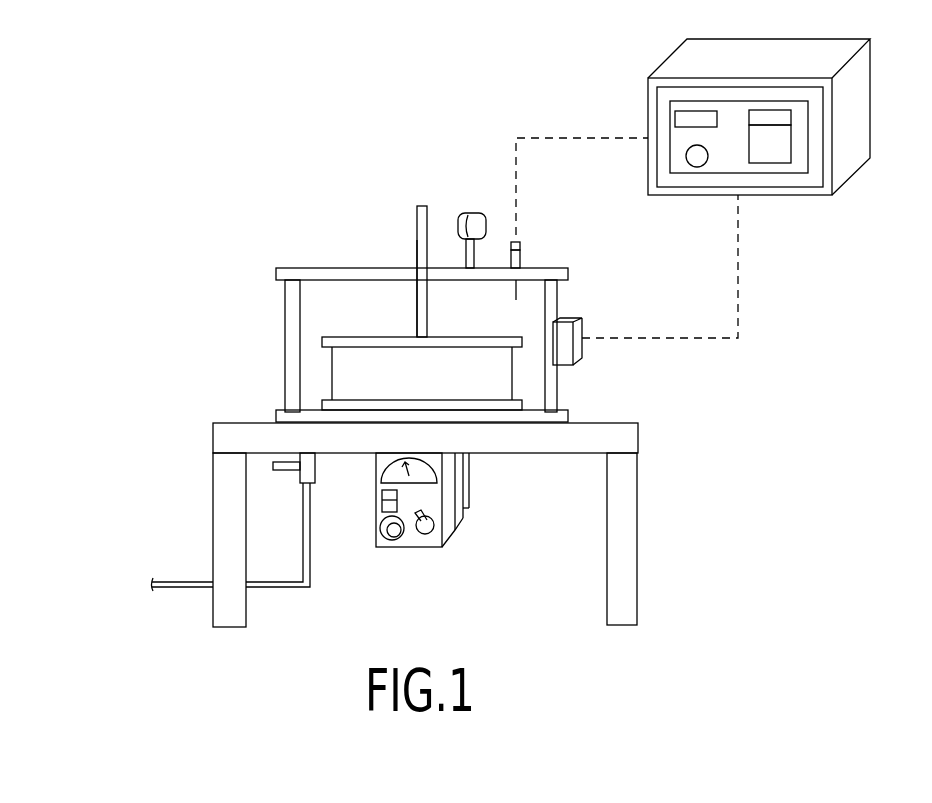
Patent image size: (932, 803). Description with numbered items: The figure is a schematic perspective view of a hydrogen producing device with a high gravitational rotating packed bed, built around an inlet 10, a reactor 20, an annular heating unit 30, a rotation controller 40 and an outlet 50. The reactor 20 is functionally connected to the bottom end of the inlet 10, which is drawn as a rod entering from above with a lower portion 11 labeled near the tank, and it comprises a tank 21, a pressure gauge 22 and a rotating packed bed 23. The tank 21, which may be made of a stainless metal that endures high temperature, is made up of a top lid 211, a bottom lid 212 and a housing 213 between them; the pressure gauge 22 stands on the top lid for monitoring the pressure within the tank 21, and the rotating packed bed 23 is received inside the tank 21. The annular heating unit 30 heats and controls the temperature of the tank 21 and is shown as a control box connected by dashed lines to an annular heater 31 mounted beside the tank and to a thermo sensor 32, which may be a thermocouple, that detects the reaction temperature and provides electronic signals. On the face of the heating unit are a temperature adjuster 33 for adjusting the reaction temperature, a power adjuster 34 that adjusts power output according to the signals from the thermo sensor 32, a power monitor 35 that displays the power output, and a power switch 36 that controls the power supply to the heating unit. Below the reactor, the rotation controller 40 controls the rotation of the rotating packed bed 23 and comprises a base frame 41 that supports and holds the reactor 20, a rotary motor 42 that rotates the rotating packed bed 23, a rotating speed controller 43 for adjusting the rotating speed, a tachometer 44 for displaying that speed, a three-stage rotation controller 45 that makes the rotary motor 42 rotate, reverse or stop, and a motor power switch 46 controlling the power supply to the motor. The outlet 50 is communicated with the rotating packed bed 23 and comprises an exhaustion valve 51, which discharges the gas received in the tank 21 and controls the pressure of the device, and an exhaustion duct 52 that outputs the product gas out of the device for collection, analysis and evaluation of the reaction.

The inlet 10 is at (413, 223).
The rod lower portion 11 is at (420, 247).
The reactor 20 is at (434, 170).
The tank 21 is at (272, 312).
The top lid 211 is at (320, 277).
The bottom lid 212 is at (276, 412).
The housing 213 is at (285, 352).
The pressure gauge 22 is at (470, 230).
The rotating packed bed 23 is at (374, 360).
The annular heating unit 30 is at (762, 262).
The annular heater 31 is at (575, 358).
The thermo sensor 32 is at (520, 248).
The temperature adjuster 33 is at (777, 120).
The power adjuster 34 is at (770, 155).
The power monitor 35 is at (680, 118).
The power switch 36 is at (697, 158).
The rotation controller 40 is at (497, 520).
The base frame 41 is at (632, 536).
The rotary motor 42 is at (463, 475).
The rotating speed controller 43 is at (394, 533).
The tachometer 44 is at (392, 476).
The three-stage rotation controller 45 is at (431, 529).
The motor power switch 46 is at (382, 503).
The outlet 50 is at (323, 556).
The exhaustion valve 51 is at (288, 468).
The exhaustion duct 52 is at (172, 585).